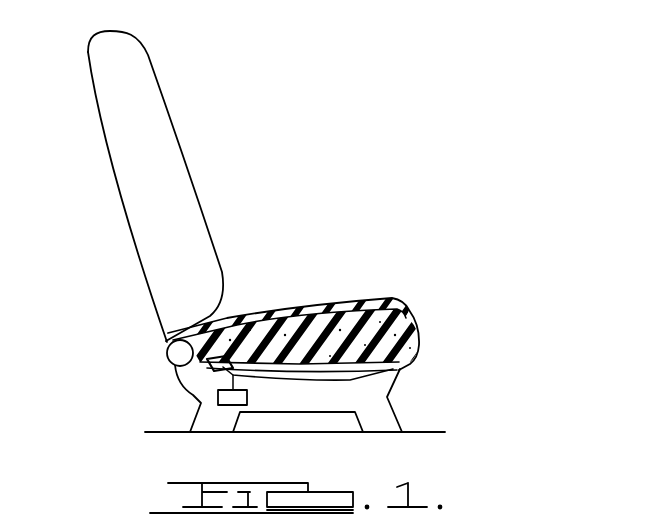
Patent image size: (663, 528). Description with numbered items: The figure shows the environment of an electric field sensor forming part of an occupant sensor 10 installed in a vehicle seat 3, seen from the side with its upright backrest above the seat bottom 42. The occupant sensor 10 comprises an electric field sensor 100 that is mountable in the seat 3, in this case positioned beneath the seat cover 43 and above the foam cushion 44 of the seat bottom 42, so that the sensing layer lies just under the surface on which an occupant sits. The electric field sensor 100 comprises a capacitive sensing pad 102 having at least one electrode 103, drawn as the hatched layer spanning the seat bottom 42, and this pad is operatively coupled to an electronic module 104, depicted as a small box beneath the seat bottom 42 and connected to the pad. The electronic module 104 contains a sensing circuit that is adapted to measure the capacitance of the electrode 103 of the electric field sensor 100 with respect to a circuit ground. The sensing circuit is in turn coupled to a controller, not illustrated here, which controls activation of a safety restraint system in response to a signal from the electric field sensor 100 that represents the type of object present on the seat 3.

The occupant sensor 10 is at (396, 171).
The vehicle seat 3 is at (118, 193).
The electric field sensor 100 is at (428, 281).
The foam cushion 44 is at (403, 338).
The seat cover 43 is at (325, 308).
The seat bottom 42 is at (417, 356).
The capacitive sensing pad 102 is at (282, 315).
The electrode 103 is at (323, 292).
The electronic module 104 is at (218, 397).